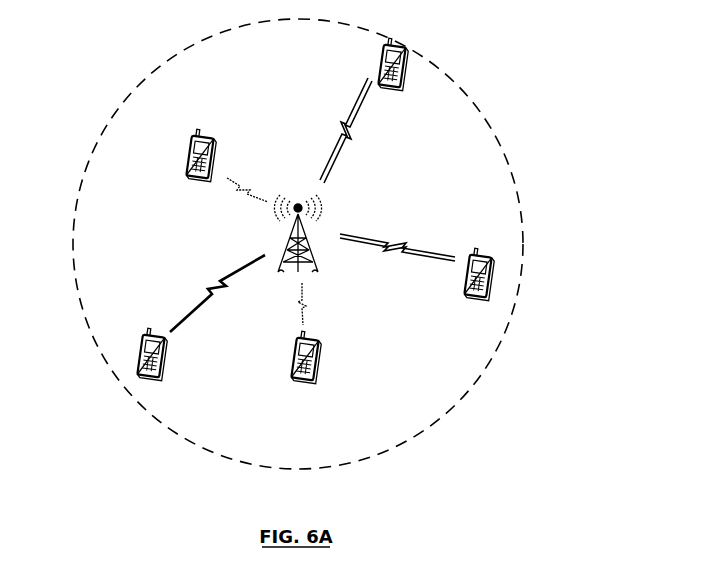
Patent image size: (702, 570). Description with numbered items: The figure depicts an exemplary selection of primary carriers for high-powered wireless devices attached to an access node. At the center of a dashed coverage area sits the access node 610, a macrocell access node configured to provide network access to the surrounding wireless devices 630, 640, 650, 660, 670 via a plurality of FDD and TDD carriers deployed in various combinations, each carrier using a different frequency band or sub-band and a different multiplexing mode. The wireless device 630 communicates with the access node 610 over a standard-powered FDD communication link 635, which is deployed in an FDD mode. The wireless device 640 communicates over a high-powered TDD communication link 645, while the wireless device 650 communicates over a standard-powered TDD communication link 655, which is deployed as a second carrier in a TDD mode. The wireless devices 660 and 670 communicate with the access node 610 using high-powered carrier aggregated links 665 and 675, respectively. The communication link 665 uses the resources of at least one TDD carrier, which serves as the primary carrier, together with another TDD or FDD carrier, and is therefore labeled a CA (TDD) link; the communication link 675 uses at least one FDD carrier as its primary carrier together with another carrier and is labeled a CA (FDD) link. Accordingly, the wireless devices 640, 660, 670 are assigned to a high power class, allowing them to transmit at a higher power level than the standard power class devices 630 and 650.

The access node 610 is at (298, 204).
The wireless device 630 is at (188, 167).
The FDD communication link 635 is at (240, 187).
The wireless device 640 is at (138, 363).
The TDD communication link 645 is at (207, 293).
The wireless device 650 is at (297, 383).
The TDD communication link 655 is at (303, 318).
The wireless device 660 is at (485, 262).
The CA (TDD) communication link 665 is at (393, 237).
The wireless device 670 is at (404, 52).
The CA (FDD) communication link 675 is at (355, 102).